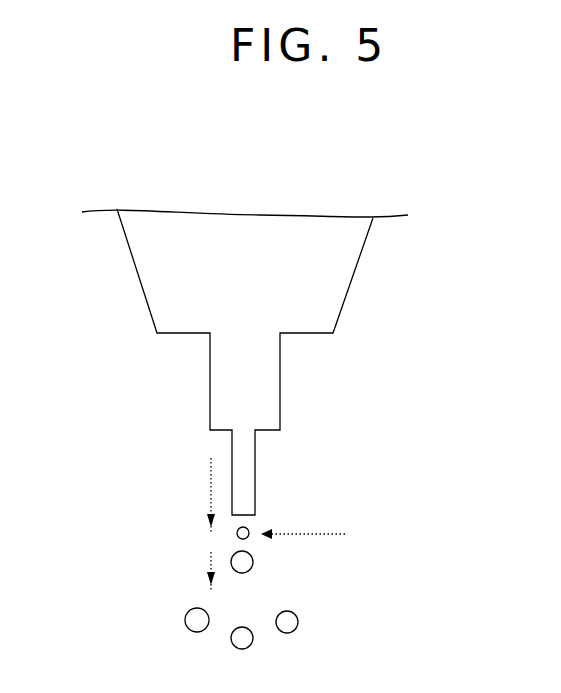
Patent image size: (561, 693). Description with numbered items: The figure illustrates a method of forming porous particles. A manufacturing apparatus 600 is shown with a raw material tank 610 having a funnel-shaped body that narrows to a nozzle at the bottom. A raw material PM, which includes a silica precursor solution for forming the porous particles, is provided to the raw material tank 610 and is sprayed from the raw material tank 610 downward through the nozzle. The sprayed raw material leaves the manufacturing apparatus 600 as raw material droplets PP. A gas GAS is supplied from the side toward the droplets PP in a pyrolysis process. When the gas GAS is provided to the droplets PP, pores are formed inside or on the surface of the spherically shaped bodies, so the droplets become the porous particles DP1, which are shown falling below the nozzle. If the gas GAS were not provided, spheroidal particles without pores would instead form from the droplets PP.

The manufacturing apparatus 600 is at (127, 165).
The raw material tank 610 is at (352, 280).
The raw material PM is at (250, 246).
The raw material droplets PP is at (247, 528).
The gas GAS is at (327, 536).
The porous particles DP1 is at (253, 567).